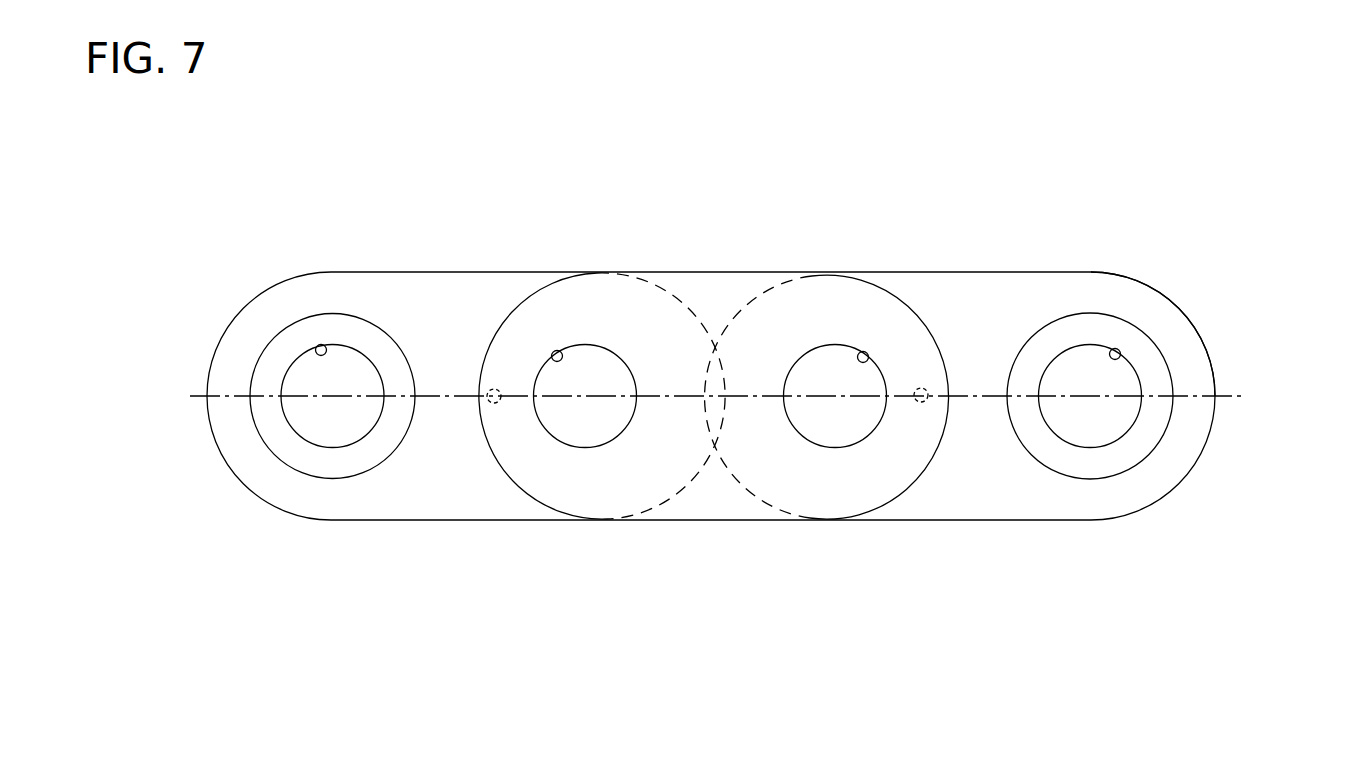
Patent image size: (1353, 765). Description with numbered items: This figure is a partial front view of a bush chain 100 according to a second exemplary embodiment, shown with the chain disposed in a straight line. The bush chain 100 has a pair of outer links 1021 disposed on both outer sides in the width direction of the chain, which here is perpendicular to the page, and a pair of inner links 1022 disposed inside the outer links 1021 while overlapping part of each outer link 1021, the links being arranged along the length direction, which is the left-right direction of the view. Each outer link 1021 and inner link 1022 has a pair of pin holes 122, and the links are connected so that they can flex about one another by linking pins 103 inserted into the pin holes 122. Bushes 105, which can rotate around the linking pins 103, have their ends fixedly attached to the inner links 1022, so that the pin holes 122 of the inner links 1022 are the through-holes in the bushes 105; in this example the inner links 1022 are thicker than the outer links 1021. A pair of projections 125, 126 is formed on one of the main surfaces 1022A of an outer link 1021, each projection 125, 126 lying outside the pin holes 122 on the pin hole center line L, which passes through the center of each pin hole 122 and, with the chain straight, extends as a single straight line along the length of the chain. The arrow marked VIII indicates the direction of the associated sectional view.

The bush chain 100 is at (795, 206).
The inner link 1022 is at (430, 269).
The outer link 1021 is at (712, 269).
The main surface 1022A is at (1135, 290).
The bush 105 is at (262, 371).
The linking pin 103 is at (557, 428).
The pin hole 122 is at (317, 346).
The projection 125 is at (490, 390).
The projection 126 is at (928, 390).
The pin hole center line L is at (1223, 397).
The section line VIII is at (1334, 407).